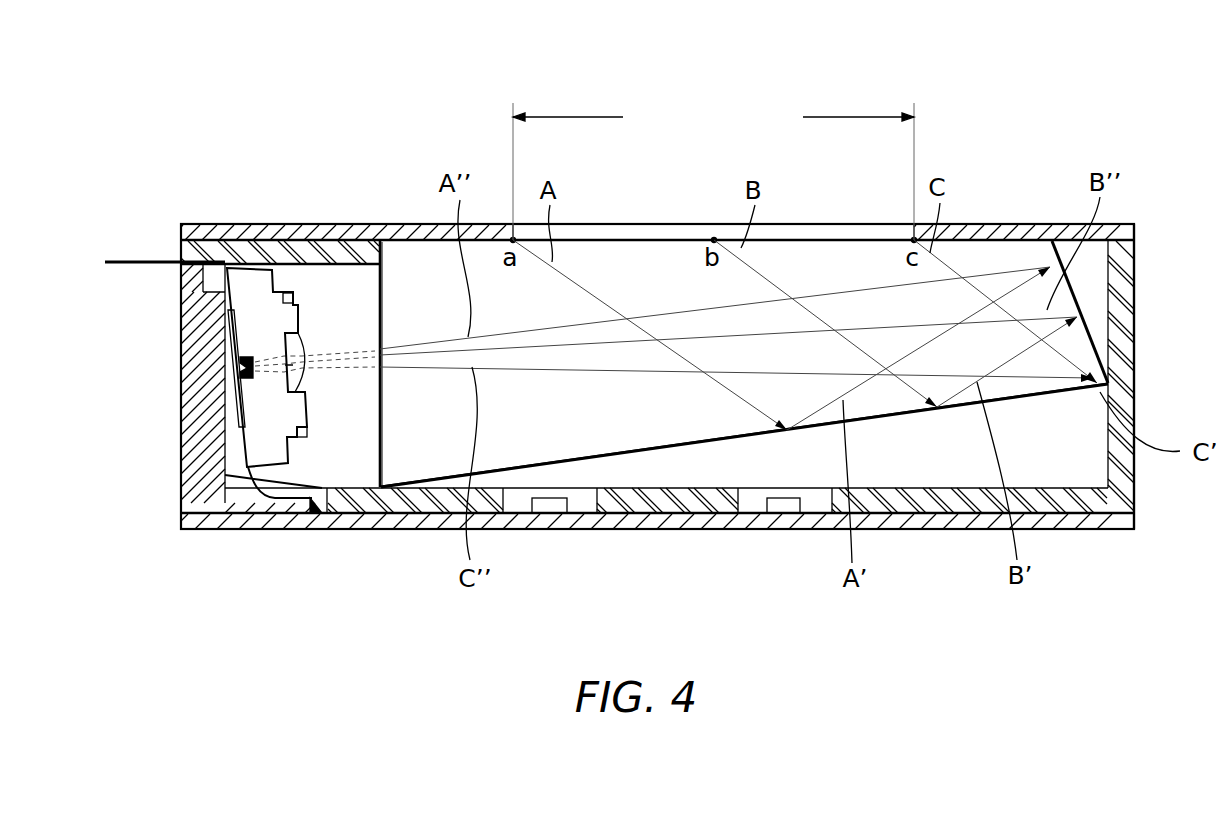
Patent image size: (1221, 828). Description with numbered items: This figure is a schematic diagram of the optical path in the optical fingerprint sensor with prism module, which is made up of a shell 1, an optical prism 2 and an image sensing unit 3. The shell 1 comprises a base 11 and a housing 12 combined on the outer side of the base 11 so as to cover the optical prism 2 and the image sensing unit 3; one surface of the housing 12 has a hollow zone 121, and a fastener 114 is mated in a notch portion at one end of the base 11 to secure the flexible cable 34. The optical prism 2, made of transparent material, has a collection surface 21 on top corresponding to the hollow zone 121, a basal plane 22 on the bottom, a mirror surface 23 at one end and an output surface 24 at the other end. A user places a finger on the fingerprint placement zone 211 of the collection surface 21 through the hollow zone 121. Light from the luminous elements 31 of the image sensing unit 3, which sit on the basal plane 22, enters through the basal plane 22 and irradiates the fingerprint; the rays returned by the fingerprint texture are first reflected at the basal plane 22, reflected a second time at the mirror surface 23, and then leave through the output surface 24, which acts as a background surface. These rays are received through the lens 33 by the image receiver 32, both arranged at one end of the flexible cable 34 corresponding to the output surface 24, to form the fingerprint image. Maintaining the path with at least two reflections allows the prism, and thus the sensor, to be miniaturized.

The shell 1 is at (1158, 188).
The optical prism 2 is at (1041, 405).
The image sensing unit 3 is at (303, 285).
The base 11 is at (1125, 476).
The housing 12 is at (1120, 522).
The collection surface 21 is at (641, 240).
The basal plane 22 is at (910, 413).
The mirror surface 23 is at (1068, 290).
The output surface 24 is at (381, 410).
The luminous elements 31 is at (785, 505).
The image receiver 32 is at (250, 292).
The lens 33 is at (288, 352).
The flexible cable 34 is at (140, 258).
The fastener 114 is at (196, 428).
The hollow zone 121 is at (815, 232).
The fingerprint placement zone 211 is at (710, 128).